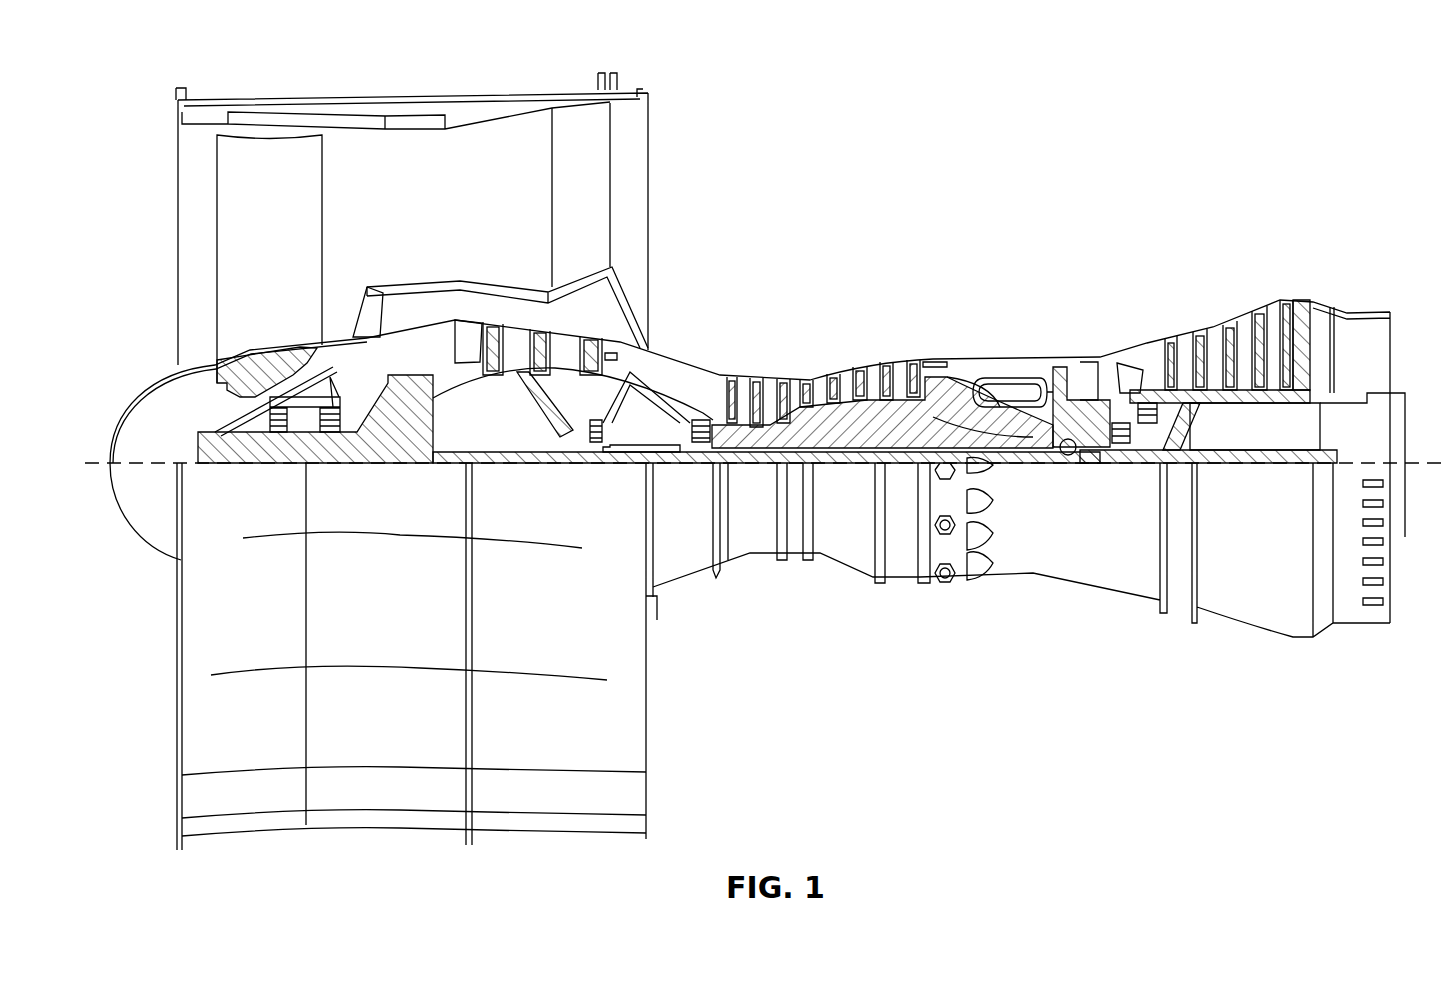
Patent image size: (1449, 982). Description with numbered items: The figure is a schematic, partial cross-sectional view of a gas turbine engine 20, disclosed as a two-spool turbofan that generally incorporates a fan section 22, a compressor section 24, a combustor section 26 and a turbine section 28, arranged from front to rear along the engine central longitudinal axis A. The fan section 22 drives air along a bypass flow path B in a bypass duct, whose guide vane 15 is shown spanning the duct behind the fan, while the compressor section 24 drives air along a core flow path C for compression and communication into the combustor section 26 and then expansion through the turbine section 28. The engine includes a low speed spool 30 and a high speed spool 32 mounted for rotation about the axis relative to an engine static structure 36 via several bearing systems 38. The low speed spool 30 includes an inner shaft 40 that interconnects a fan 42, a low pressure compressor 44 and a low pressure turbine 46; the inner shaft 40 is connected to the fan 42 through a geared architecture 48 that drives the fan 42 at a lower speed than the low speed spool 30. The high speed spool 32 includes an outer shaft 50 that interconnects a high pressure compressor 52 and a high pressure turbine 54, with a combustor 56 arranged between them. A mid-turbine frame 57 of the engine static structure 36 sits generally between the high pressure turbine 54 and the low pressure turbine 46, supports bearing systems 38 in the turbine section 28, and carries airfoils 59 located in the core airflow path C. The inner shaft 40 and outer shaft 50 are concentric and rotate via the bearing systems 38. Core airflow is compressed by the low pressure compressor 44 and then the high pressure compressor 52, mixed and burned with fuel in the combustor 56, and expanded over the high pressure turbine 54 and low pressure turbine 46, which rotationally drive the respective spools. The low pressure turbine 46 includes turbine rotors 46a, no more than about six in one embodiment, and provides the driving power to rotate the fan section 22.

The gas turbine engine 20 is at (1254, 149).
The fan section 22 is at (366, 90).
The fan exit guide vane 15 is at (415, 106).
The fan 42 is at (286, 238).
The geared architecture 48 is at (421, 442).
The compressor section 24 is at (698, 349).
The low pressure compressor 44 is at (537, 342).
The bearing systems 38 is at (596, 452).
The inner shaft 40 is at (676, 456).
The high pressure compressor 52 is at (832, 372).
The high speed spool 32 is at (900, 415).
The combustor 56 is at (1010, 387).
The high pressure turbine 54 is at (1074, 362).
The combustor section 26 is at (971, 303).
The mid-turbine frame 57 is at (1137, 358).
The turbine section 28 is at (1165, 301).
The airfoils 59 is at (1182, 410).
The low pressure turbine 46 is at (1243, 325).
The turbine rotors 46a is at (1270, 312).
The low speed spool 30 is at (856, 468).
The engine static structure 36 is at (906, 580).
The outer shaft 50 is at (1068, 455).